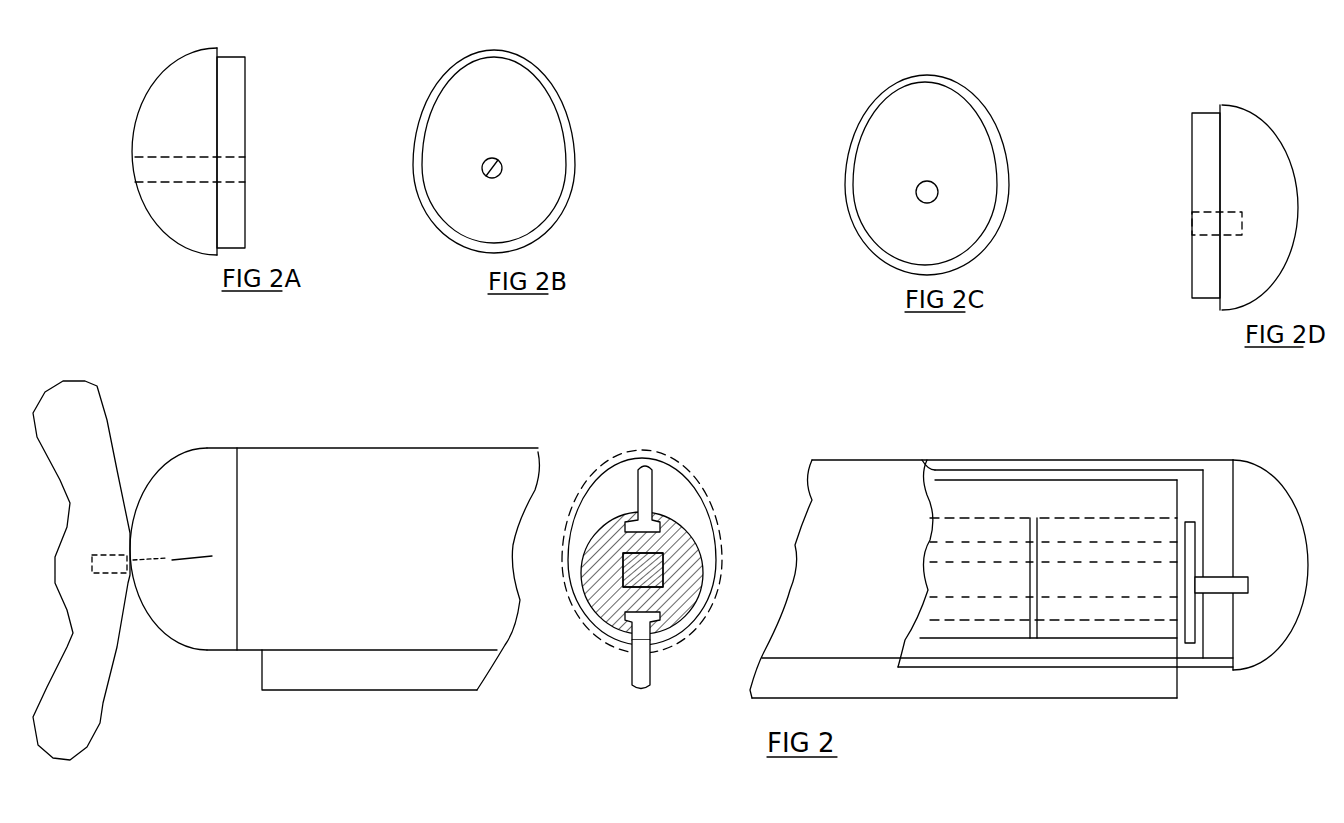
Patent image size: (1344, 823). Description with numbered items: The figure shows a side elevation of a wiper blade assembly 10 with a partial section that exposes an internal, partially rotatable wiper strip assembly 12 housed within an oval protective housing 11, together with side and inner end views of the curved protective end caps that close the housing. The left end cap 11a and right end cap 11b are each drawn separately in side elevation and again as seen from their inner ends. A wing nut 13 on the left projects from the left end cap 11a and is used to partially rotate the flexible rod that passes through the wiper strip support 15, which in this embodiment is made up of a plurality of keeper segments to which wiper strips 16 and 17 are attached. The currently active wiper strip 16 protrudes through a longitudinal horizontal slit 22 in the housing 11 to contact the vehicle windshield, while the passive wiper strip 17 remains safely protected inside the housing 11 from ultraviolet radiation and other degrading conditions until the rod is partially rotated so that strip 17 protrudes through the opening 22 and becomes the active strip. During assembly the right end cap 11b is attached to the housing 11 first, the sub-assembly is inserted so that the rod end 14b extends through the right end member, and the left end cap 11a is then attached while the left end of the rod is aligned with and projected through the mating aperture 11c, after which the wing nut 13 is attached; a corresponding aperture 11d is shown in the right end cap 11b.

In FIG. 2, the wiper blade assembly 10 is at (435, 718).
In FIG. 2, the oval protective housing 11 is at (345, 460).
In FIG. 2A, the left end cap 11a is at (188, 82).
In FIG. 2B, the left end cap 11a is at (528, 60).
In FIG. 2, the left end cap 11a is at (205, 480).
In FIG. 2C, the right end cap 11b is at (953, 82).
In FIG. 2D, the right end cap 11b is at (1237, 137).
In FIG. 2, the right end cap 11b is at (1262, 520).
In FIG. 2A, the mating aperture 11c is at (157, 170).
In FIG. 2B, the mating aperture 11c is at (498, 160).
In FIG. 2C, the rear end cap aperture 11d is at (931, 182).
In FIG. 2D, the rear end cap aperture 11d is at (1203, 225).
In FIG. 2, the wiper strip assembly 12 is at (677, 508).
In FIG. 2, the wing nut 13 is at (103, 647).
In FIG. 2, the rod end 14b is at (1240, 592).
In FIG. 2, the wiper strip support 15 is at (683, 540).
In FIG. 2, the wiper strip 16 is at (640, 665).
In FIG. 2, the passive wiper strip 17 is at (640, 490).
In FIG. 2, the slit 22 is at (655, 655).